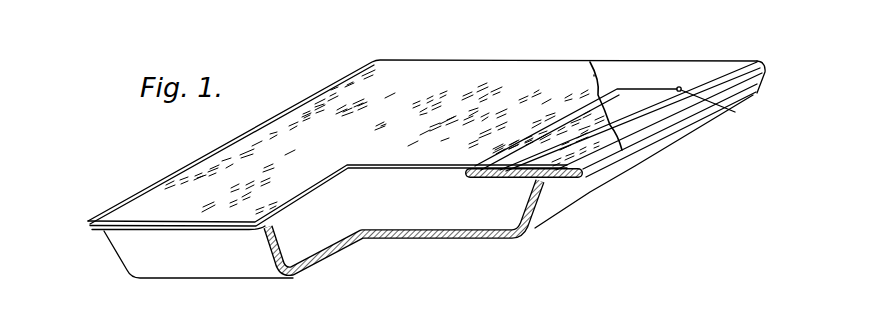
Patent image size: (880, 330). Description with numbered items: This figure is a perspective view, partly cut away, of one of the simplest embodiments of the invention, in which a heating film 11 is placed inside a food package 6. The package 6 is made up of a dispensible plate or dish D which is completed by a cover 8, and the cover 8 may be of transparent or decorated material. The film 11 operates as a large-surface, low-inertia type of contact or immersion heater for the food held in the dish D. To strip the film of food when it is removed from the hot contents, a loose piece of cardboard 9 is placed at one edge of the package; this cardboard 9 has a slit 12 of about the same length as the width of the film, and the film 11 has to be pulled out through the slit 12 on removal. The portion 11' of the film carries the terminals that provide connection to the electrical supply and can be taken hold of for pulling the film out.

The package 6 is at (636, 167).
The cover 8 is at (240, 152).
The loose piece of cardboard 9 is at (732, 65).
The heating film 11 is at (423, 222).
The portion of the film 11' is at (650, 92).
The slit 12 is at (742, 94).
The dispensible plate or dish D is at (253, 259).